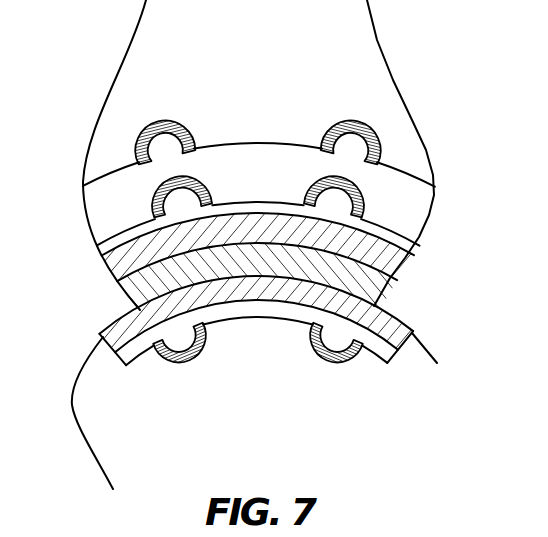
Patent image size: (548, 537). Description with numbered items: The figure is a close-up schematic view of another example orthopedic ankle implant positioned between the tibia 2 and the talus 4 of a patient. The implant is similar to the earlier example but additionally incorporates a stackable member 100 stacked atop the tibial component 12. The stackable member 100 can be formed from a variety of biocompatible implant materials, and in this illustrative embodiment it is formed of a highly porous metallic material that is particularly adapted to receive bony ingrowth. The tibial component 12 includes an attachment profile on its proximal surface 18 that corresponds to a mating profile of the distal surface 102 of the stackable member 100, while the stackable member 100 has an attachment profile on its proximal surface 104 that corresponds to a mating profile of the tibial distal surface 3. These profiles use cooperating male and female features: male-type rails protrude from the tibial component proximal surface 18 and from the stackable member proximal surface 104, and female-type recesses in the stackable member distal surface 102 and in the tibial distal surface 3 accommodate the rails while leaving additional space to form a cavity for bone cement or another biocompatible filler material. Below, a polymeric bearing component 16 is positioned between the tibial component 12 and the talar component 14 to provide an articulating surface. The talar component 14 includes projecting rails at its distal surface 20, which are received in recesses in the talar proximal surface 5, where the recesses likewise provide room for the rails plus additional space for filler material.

The tibia 2 is at (370, 50).
The tibial distal surface 3 is at (124, 171).
The talus 4 is at (101, 445).
The talar proximal surface 5 is at (142, 350).
The tibial component 12 is at (394, 261).
The talar component 14 is at (118, 332).
The bearing component 16 is at (138, 290).
The proximal surface 18 is at (108, 236).
The distal surface 20 is at (375, 357).
The stackable member 100 is at (413, 190).
The distal surface 102 is at (406, 238).
The proximal surface 104 is at (100, 181).